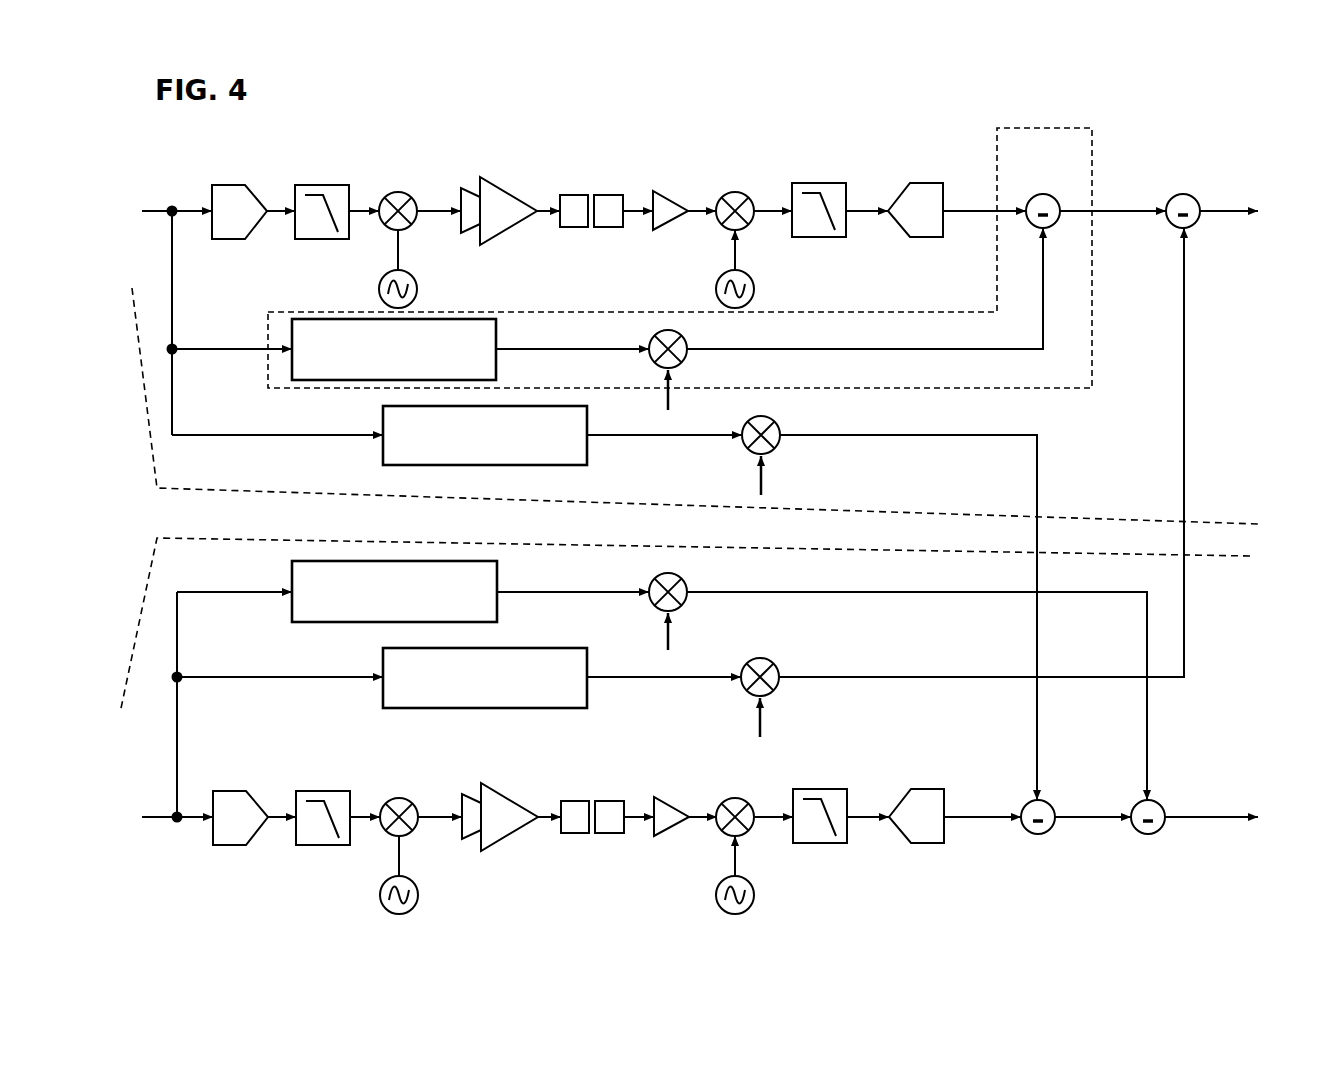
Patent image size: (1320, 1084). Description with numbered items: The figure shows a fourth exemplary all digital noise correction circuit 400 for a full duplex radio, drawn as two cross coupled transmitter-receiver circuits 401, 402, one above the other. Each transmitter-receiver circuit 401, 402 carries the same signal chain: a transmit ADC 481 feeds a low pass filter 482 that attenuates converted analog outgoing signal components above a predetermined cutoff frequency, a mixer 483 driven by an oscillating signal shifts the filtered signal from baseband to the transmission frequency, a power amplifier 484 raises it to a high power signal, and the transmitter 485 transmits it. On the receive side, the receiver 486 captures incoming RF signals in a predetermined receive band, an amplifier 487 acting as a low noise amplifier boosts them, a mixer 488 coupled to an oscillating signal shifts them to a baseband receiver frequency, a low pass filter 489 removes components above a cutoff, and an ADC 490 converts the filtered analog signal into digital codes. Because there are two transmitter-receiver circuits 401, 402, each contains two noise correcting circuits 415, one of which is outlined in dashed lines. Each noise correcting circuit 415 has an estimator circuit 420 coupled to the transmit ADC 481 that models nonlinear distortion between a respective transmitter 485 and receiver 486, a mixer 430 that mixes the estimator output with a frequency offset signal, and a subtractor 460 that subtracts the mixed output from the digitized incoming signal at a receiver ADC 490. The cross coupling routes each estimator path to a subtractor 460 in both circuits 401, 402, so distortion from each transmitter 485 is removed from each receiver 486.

The all digital noise correction circuit 400 is at (689, 498).
The transmitter-receiver circuit 401 is at (695, 406).
The transmitter-receiver circuit 402 is at (685, 625).
The noise correcting circuit 415 is at (680, 258).
The estimator circuit 420 is at (439, 513).
The mixer 430 is at (655, 362).
The subtractor 460 is at (1049, 194).
The ADC 481 is at (237, 192).
The low pass filter 482 is at (334, 192).
The mixer 483 is at (403, 196).
The power amplifier 484 is at (506, 197).
The transmitter 485 is at (578, 228).
The receiver 486 is at (608, 194).
The amplifier 487 is at (672, 204).
The mixer 488 is at (741, 196).
The low pass filter 489 is at (835, 187).
The ADC 490 is at (930, 187).